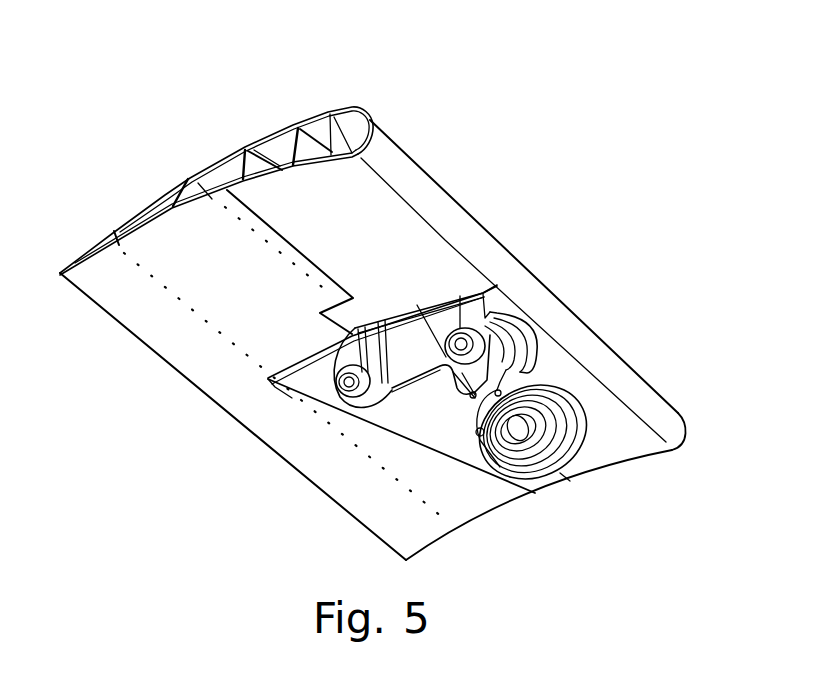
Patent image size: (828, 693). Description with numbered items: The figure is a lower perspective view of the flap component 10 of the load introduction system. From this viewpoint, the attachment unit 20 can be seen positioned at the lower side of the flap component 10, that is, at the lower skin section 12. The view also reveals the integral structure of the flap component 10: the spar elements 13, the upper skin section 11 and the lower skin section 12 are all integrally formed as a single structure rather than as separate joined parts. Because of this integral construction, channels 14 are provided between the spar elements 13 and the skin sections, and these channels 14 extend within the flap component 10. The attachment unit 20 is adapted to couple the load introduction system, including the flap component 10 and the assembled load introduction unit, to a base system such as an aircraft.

The flap component 10 is at (395, 117).
The upper skin section 11 is at (278, 128).
The lower skin section 12 is at (276, 178).
The spar elements 13 is at (236, 149).
The channels 14 is at (272, 158).
The attachment unit 20 is at (543, 323).